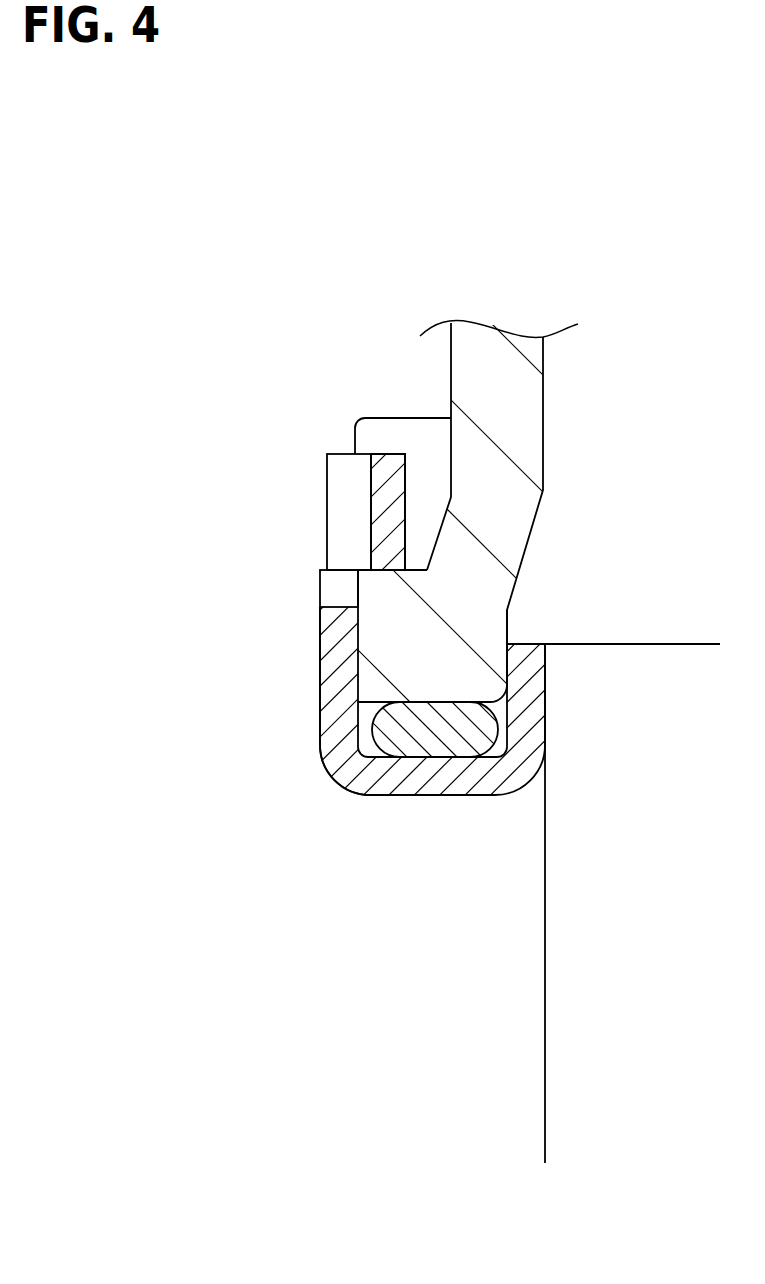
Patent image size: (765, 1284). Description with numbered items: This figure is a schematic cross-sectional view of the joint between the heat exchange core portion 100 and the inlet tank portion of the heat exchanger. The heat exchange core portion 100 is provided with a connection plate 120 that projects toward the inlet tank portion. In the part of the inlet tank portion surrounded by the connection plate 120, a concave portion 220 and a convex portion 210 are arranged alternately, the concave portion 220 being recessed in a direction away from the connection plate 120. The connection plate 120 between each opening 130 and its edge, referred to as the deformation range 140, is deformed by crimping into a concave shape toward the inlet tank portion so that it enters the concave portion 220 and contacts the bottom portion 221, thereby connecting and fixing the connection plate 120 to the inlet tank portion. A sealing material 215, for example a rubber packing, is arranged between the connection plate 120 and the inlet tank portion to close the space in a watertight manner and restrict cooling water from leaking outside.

The heat exchange core portion 100 is at (587, 910).
The connection plate 120 is at (318, 742).
The opening 130 is at (333, 590).
The deformation range 140 is at (377, 487).
The convex portion 210 is at (388, 428).
The sealing material 215 is at (390, 728).
The concave portion 220 is at (448, 452).
The bottom portion 221 is at (377, 557).